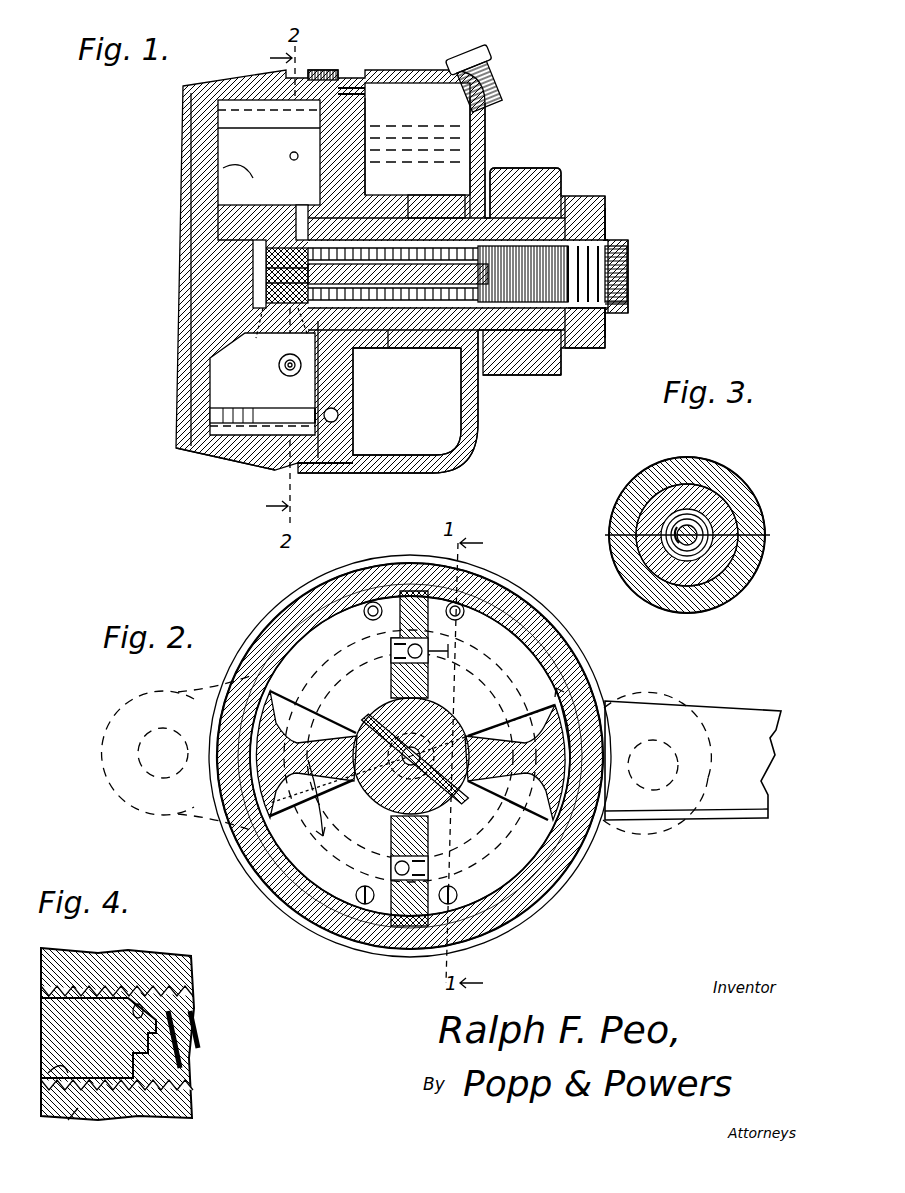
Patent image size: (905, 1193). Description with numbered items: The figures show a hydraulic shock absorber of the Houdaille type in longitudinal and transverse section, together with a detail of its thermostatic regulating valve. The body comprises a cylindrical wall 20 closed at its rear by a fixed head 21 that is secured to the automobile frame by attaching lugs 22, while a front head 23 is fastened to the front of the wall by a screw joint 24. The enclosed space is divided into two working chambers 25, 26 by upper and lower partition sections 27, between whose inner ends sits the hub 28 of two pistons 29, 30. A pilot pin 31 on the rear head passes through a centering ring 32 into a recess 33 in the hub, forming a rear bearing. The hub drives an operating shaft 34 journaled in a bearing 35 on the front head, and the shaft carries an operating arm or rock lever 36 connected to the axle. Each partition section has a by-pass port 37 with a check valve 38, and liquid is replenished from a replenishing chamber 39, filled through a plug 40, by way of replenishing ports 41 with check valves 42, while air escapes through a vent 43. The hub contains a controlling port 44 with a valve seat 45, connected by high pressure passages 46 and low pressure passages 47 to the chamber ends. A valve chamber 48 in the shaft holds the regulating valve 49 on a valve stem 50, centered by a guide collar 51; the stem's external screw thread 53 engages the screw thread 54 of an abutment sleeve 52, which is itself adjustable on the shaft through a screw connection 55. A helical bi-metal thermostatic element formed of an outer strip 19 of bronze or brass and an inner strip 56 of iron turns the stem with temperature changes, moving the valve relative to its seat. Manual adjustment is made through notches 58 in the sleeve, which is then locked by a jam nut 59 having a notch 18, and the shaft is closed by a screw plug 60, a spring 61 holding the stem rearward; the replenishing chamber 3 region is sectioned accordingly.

In FIG. 1, the fluid reservoir 3 is at (382, 160).
In FIG. 1, the notch 18 is at (598, 258).
In FIG. 1, the outer layer or strip of bronze or brass 19 is at (470, 205).
In FIG. 3, the outer layer or strip of bronze or brass 19 is at (636, 532).
In FIG. 1, the cylindrical wall 20 is at (232, 456).
In FIG. 2, the cylindrical wall 20 is at (310, 600).
In FIG. 1, the fixed head 21 is at (185, 128).
In FIG. 2, the attaching lugs 22 is at (112, 700).
In FIG. 1, the front head 23 is at (338, 362).
In FIG. 1, the screw joint 24 is at (330, 462).
In FIG. 2, the working chamber 25 is at (313, 697).
In FIG. 2, the working chamber 26 is at (519, 709).
In FIG. 1, the partition sections 27 is at (155, 405).
In FIG. 2, the partition sections 27 is at (403, 583).
In FIG. 1, the hub 28 is at (239, 173).
In FIG. 2, the hub 28 is at (430, 700).
In FIG. 2, the piston 29 is at (311, 798).
In FIG. 2, the piston 30 is at (508, 800).
In FIG. 1, the centering or pilot pin 31 is at (255, 260).
In FIG. 1, the centering ring 32 is at (210, 212).
In FIG. 1, the recess 33 is at (245, 245).
In FIG. 1, the operating shaft 34 is at (410, 322).
In FIG. 1, the bearing 35 is at (405, 210).
In FIG. 3, the bearing 35 is at (700, 475).
In FIG. 1, the operating arm or rock lever 36 is at (548, 168).
In FIG. 2, the operating arm or rock lever 36 is at (752, 808).
In FIG. 1, the by-pass port 37 is at (281, 147).
In FIG. 2, the by-pass port 37 is at (442, 643).
In FIG. 2, the check valve 38 is at (383, 643).
In FIG. 1, the replenishing chamber 39 is at (445, 438).
In FIG. 1, the plug 40 is at (460, 66).
In FIG. 1, the replenishing port 41 is at (330, 408).
In FIG. 2, the replenishing port 41 is at (352, 880).
In FIG. 1, the check valve 42 is at (262, 413).
In FIG. 1, the vent 43 is at (338, 85).
In FIG. 2, the vent 43 is at (363, 594).
In FIG. 1, the controlling port 44 is at (230, 285).
In FIG. 2, the controlling port 44 is at (422, 860).
In FIG. 1, the valve seat 45 is at (293, 208).
In FIG. 1, the high pressure passages 46 is at (270, 330).
In FIG. 2, the high pressure passages 46 is at (365, 710).
In FIG. 1, the low pressure passages 47 is at (298, 197).
In FIG. 2, the low pressure passages 47 is at (409, 764).
In FIG. 1, the valve chamber 48 is at (395, 325).
In FIG. 1, the controlling or regulating valve 49 is at (283, 335).
In FIG. 2, the controlling or regulating valve 49 is at (398, 738).
In FIG. 1, the valve stem 50 is at (478, 238).
In FIG. 3, the valve stem 50 is at (702, 535).
In FIG. 4, the valve stem 50 is at (45, 1045).
In FIG. 1, the centering or guide collar 51 is at (410, 158).
In FIG. 1, the abutment sleeve 52 is at (598, 200).
In FIG. 4, the abutment sleeve 52 is at (110, 950).
In FIG. 1, the external screw thread 53 is at (515, 345).
In FIG. 4, the external screw thread 53 is at (48, 1058).
In FIG. 1, the screw thread 54 is at (600, 232).
In FIG. 4, the screw thread 54 is at (70, 1104).
In FIG. 1, the screw connection 55 is at (545, 367).
In FIG. 1, the inner layer or strip of iron 56 is at (565, 240).
In FIG. 3, the inner layer or strip of iron 56 is at (672, 560).
In FIG. 1, the notches 58 is at (595, 305).
In FIG. 1, the jam nut 59 is at (597, 336).
In FIG. 1, the screw plug 60 is at (620, 270).
In FIG. 1, the spring 61 is at (615, 282).
In FIG. 4, the spring 61 is at (192, 1020).